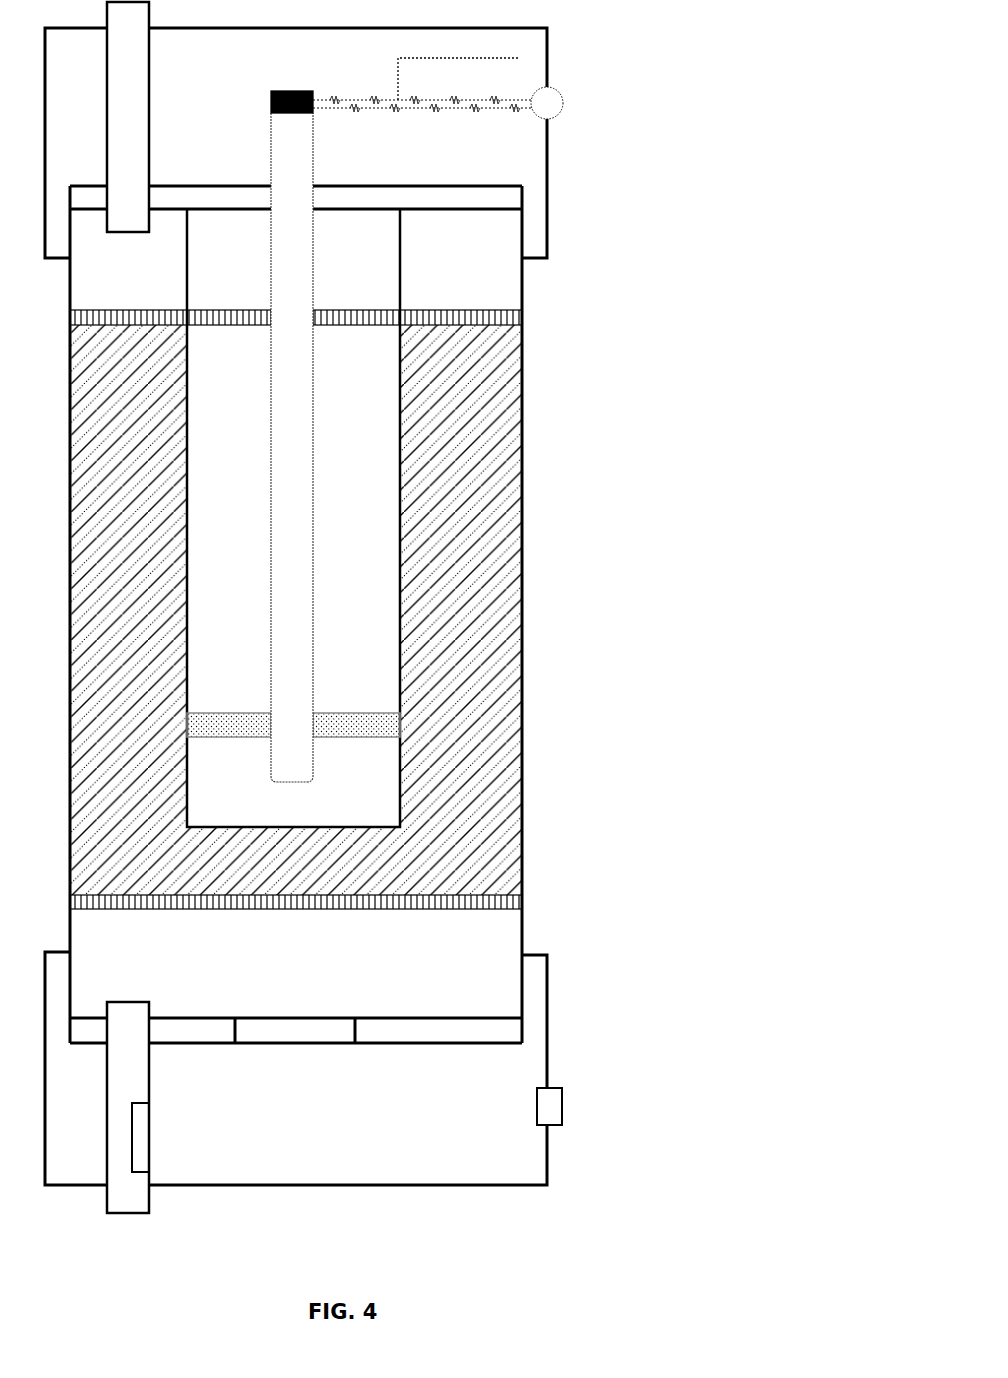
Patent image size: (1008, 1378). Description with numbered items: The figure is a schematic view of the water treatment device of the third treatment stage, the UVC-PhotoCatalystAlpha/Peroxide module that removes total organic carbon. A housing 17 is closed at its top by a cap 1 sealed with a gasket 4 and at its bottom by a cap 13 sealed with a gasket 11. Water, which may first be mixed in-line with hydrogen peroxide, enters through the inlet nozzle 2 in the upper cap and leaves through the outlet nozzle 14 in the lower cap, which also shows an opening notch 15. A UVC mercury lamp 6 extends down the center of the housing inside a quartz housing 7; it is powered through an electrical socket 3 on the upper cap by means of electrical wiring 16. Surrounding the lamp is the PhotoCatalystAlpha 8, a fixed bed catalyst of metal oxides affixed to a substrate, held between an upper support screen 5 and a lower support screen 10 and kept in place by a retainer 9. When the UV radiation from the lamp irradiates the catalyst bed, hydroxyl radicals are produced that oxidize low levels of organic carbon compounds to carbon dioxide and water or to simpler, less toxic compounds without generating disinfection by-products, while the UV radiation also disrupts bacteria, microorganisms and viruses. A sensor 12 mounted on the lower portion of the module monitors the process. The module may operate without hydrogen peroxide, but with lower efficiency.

The cap 1 is at (493, 133).
The inlet nozzle 2 is at (142, 170).
The electrical socket 3 is at (563, 103).
The gasket 4 is at (493, 200).
The support screen 5 is at (522, 317).
The UVC mercury lamp 6 is at (313, 437).
The quartz housing 7 is at (360, 553).
The PhotoCatalystAlpha 8 is at (455, 638).
The retainer 9 is at (380, 724).
The support screen 10 is at (522, 902).
The gasket 11 is at (522, 1025).
The sensor 12 is at (562, 1107).
The cap 13 is at (500, 1172).
The outlet nozzle 14 is at (149, 1070).
The opening notch 15 is at (140, 1156).
The electrical wiring 16 is at (520, 58).
The housing 17 is at (522, 847).